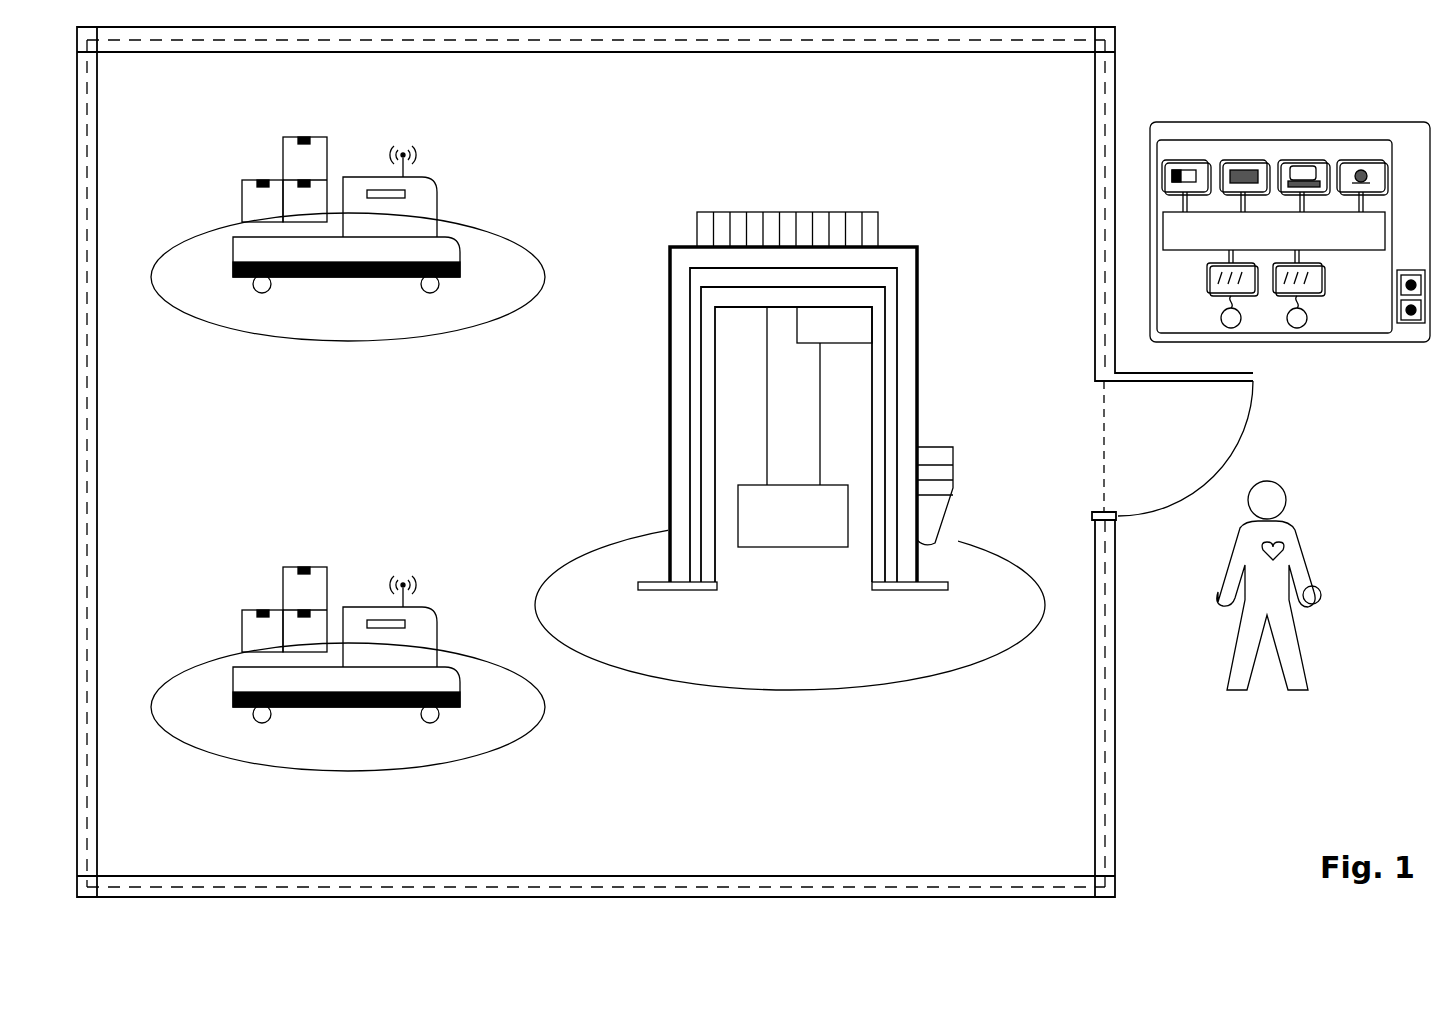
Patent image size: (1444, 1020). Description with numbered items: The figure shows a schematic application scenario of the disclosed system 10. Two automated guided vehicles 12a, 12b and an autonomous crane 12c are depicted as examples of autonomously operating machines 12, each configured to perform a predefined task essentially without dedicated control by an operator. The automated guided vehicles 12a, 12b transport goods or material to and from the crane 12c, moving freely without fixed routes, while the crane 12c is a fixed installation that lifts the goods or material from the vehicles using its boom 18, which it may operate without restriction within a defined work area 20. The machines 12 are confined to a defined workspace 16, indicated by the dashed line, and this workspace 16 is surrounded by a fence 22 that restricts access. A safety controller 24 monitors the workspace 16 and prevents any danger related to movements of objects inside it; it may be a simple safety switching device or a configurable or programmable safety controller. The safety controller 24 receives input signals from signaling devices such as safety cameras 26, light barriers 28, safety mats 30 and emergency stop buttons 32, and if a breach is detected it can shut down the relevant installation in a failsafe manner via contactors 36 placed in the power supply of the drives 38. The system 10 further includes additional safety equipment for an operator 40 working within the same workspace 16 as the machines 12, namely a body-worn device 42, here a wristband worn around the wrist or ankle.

The system 10 is at (1285, 213).
The autonomously operating machines 12 is at (665, 462).
The automated guided vehicle 12a is at (348, 206).
The automated guided vehicle 12b is at (348, 636).
The autonomous crane 12c is at (817, 414).
The workspace 16 is at (917, 42).
The boom 18 is at (857, 323).
The work area 20 is at (848, 690).
The fence 22 is at (1002, 52).
The safety controller 24 is at (1152, 122).
The safety cameras 26 is at (1180, 165).
The light barriers 28 is at (1238, 165).
The safety mats 30 is at (1297, 165).
The emergency stop buttons 32 is at (1367, 165).
The contactors 36 is at (1315, 283).
The drives 38 is at (1231, 328).
The operator 40 is at (1303, 585).
The body-worn device 42 is at (1320, 590).